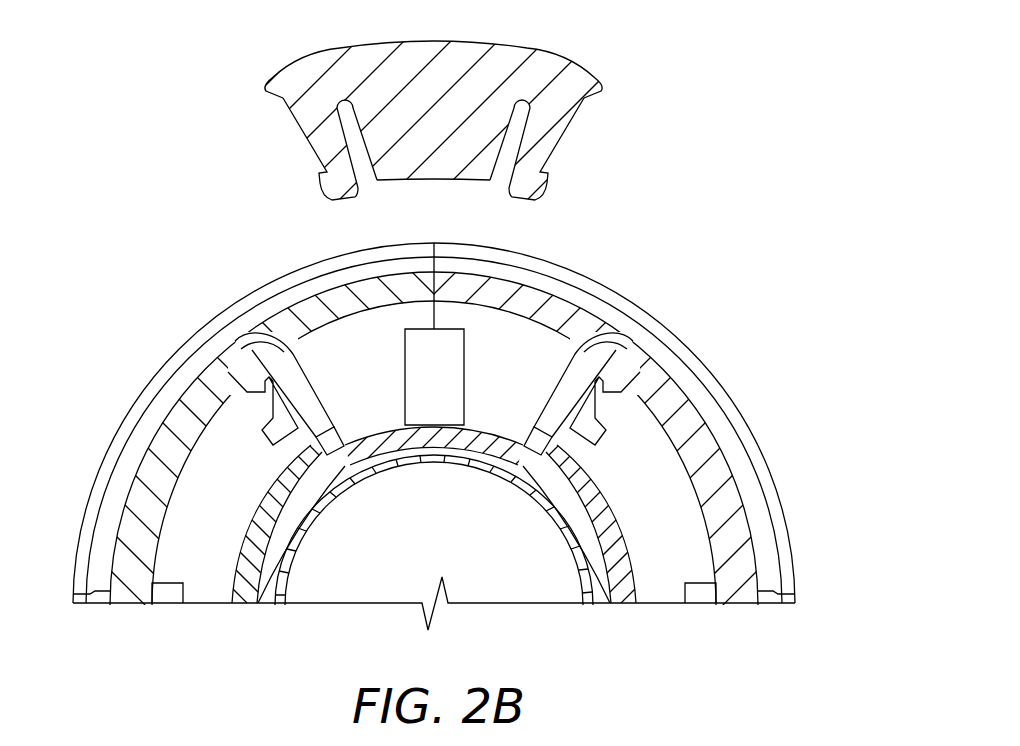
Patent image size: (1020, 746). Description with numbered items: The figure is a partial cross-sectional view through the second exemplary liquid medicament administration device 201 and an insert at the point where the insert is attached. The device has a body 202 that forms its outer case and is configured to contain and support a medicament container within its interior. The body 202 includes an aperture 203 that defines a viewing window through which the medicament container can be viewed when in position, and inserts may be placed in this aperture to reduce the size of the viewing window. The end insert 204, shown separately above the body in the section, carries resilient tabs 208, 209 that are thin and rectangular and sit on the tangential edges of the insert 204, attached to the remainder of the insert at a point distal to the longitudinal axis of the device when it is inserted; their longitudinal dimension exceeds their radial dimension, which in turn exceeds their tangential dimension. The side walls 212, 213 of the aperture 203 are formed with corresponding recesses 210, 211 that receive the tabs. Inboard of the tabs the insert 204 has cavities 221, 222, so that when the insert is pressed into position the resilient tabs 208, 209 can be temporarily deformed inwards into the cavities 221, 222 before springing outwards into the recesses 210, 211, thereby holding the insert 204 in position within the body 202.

The liquid medicament administration device 201 is at (702, 330).
The body 202 is at (122, 422).
The aperture 203 is at (493, 460).
The end insert 204 is at (438, 46).
The resilient tab 208 is at (318, 173).
The resilient tab 209 is at (542, 168).
The recess 210 is at (337, 438).
The recess 211 is at (531, 438).
The side wall 212 is at (318, 405).
The side wall 213 is at (550, 405).
The cavity 221 is at (507, 143).
The cavity 222 is at (350, 142).